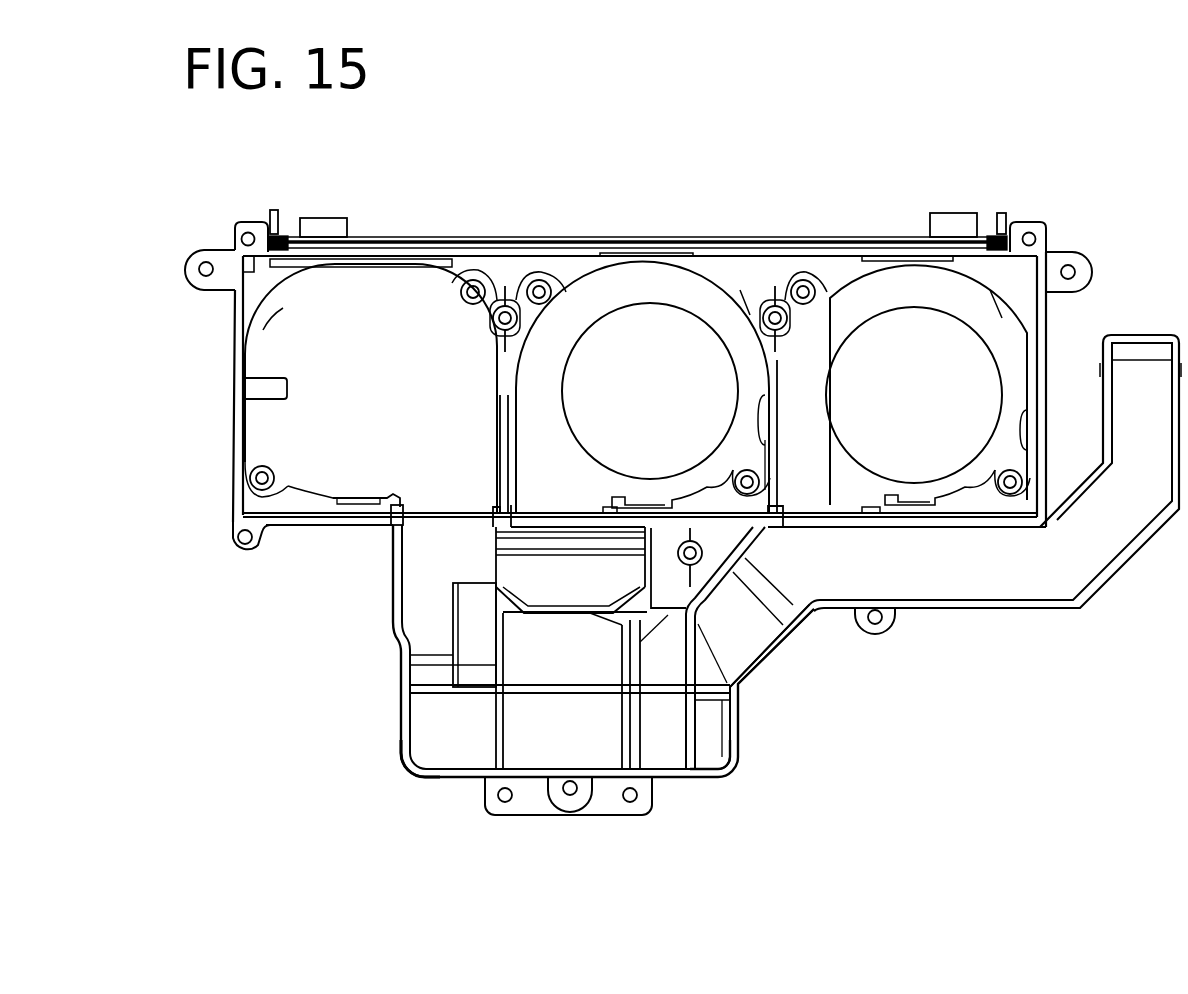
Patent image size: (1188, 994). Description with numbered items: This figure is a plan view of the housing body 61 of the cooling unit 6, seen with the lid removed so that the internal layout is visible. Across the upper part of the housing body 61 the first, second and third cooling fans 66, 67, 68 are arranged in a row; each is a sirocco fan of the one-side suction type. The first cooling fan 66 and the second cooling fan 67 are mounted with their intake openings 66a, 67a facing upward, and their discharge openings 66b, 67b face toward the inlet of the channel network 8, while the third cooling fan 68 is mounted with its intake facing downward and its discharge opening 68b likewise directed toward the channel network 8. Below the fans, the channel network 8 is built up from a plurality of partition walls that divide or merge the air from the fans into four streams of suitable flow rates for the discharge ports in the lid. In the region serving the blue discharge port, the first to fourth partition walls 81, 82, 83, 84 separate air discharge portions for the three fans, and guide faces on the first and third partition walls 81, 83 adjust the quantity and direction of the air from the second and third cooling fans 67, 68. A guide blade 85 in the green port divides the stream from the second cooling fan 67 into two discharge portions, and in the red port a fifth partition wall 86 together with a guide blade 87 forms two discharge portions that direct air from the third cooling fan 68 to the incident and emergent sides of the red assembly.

The cooling unit 6 is at (771, 166).
The housing body 61 is at (537, 240).
The first cooling fan 66 is at (898, 272).
The intake opening 66a is at (918, 315).
The discharge opening 66b is at (818, 518).
The second cooling fan 67 is at (628, 276).
The intake opening 67a is at (700, 335).
The discharge opening 67b is at (555, 550).
The third cooling fan 68 is at (352, 276).
The discharge opening 68b is at (430, 517).
The channel network 8 is at (481, 740).
The first partition wall 81 is at (698, 634).
The second partition wall 82 is at (662, 697).
The third partition wall 83 is at (722, 777).
The fourth partition wall 84 is at (712, 702).
The guide blade 85 is at (567, 560).
The fifth partition wall 86 is at (452, 630).
The guide blade 87 is at (420, 762).